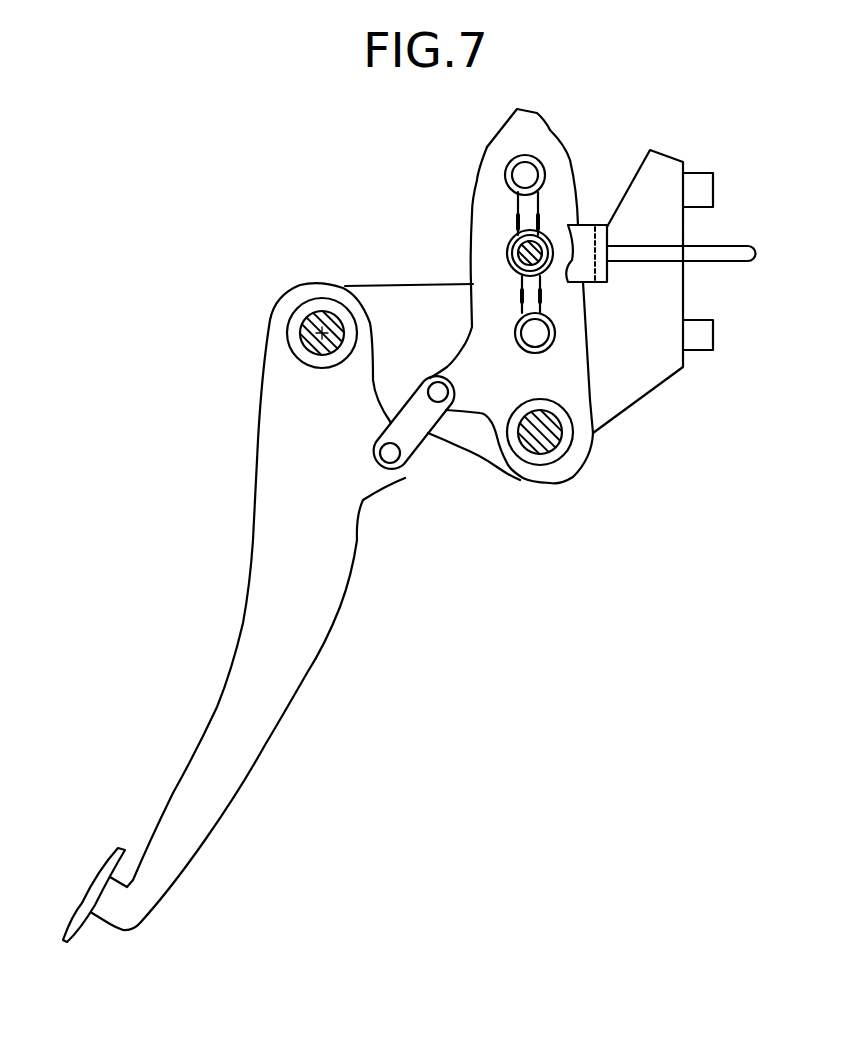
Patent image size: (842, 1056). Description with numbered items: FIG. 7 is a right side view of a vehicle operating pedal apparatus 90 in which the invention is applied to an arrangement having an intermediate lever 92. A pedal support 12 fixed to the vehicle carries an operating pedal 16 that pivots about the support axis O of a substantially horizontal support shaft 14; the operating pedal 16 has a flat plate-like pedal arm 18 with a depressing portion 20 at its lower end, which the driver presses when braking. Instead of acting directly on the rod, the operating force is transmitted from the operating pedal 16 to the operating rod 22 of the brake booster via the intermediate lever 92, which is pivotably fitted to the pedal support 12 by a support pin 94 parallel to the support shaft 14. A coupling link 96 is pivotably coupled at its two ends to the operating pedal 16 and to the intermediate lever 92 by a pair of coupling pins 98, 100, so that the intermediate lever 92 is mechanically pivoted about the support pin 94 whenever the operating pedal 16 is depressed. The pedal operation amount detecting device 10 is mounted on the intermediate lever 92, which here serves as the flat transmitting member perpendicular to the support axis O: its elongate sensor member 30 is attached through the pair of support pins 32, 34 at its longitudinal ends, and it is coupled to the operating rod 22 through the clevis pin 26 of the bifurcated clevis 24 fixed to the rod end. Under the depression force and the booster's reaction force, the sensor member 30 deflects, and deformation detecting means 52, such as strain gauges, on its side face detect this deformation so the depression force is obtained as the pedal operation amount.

The pedal operation amount detecting device 10 is at (486, 178).
The pedal support 12 is at (657, 362).
The support shaft 14 is at (307, 327).
The operating pedal 16 is at (322, 747).
The pedal arm 18 is at (267, 625).
The depressing portion 20 is at (97, 877).
The operating rod 22 is at (730, 257).
The clevis 24 is at (585, 243).
The clevis pin 26 is at (530, 253).
The sensor member 30 is at (523, 208).
The support pin 32 is at (527, 170).
The support pin 34 is at (535, 333).
The deformation detecting means 52 is at (518, 222).
The vehicle operating pedal apparatus 90 is at (572, 704).
The intermediate lever 92 is at (513, 142).
The support pin 94 is at (537, 445).
The coupling link 96 is at (412, 435).
The coupling pin 98 is at (388, 455).
The coupling pin 100 is at (430, 385).
The support axis O is at (320, 335).